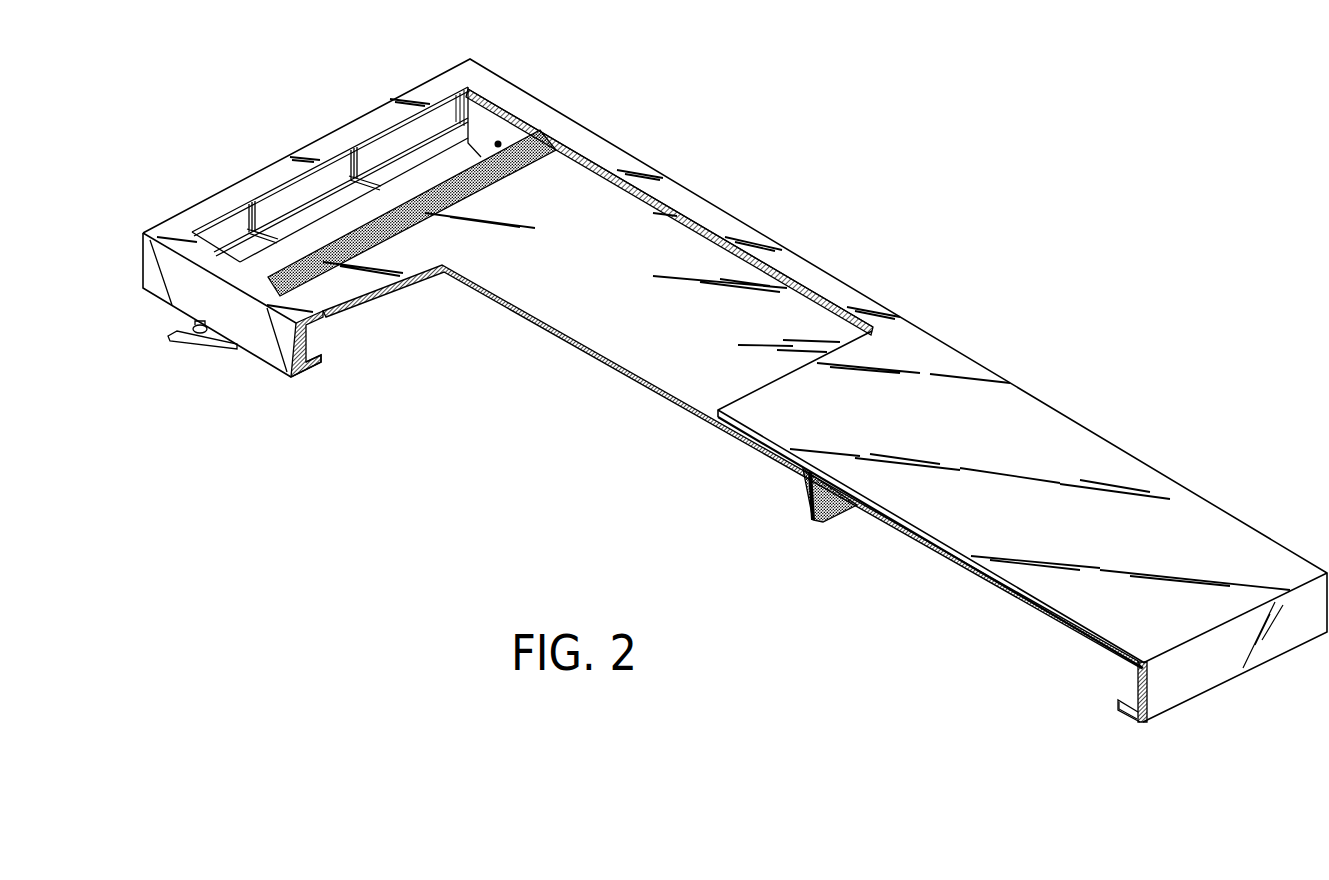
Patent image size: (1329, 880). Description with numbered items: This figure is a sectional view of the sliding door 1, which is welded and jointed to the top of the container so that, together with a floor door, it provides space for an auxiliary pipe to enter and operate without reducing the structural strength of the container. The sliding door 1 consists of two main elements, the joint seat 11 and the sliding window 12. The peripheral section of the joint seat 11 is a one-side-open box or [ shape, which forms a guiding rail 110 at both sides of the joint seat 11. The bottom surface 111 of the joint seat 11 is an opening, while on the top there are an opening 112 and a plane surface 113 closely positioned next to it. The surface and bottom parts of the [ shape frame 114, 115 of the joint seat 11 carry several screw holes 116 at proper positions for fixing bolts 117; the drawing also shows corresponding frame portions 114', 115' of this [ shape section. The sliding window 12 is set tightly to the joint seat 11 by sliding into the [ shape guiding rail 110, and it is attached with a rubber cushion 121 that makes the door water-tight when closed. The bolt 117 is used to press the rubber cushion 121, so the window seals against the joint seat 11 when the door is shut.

The sliding door 1 is at (850, 260).
The joint seat 11 is at (1167, 684).
The sliding window 12 is at (600, 317).
The guiding rail 110 is at (478, 109).
The bottom surface 111 is at (455, 160).
The opening 112 is at (337, 168).
The plane surface 113 is at (1083, 458).
The surface part of [ shape frame 114 is at (315, 399).
The end plate 114' is at (214, 268).
The bottom part of [ shape frame 115 is at (547, 107).
The rim top face 115' is at (670, 208).
The screw holes 116 is at (527, 128).
The bolt 117 is at (200, 337).
The rubber cushion 121 is at (321, 253).